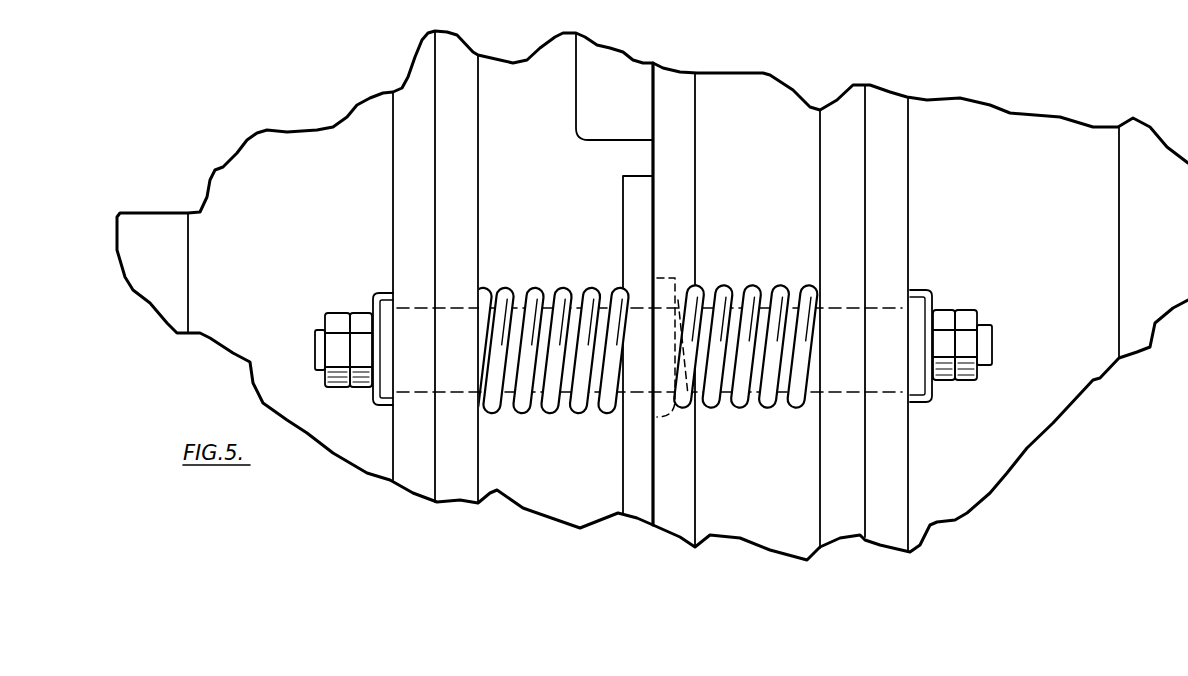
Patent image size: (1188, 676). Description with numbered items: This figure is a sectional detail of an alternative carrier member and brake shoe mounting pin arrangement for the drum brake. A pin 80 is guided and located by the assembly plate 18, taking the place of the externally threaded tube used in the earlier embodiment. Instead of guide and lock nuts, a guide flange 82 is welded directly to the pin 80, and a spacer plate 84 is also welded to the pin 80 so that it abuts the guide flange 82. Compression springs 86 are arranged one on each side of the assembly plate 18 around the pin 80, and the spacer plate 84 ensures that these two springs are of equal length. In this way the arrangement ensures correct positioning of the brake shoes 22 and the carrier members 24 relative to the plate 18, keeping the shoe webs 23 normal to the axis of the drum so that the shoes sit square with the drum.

The assembly plate 18 is at (685, 138).
The brake shoes 22 is at (188, 260).
The shoe webs 23 is at (405, 187).
The carrier members 24 is at (490, 191).
The pin 80 is at (815, 381).
The guide flange 82 is at (623, 230).
The spacer plate 84 is at (665, 419).
The compression springs 86 is at (566, 288).